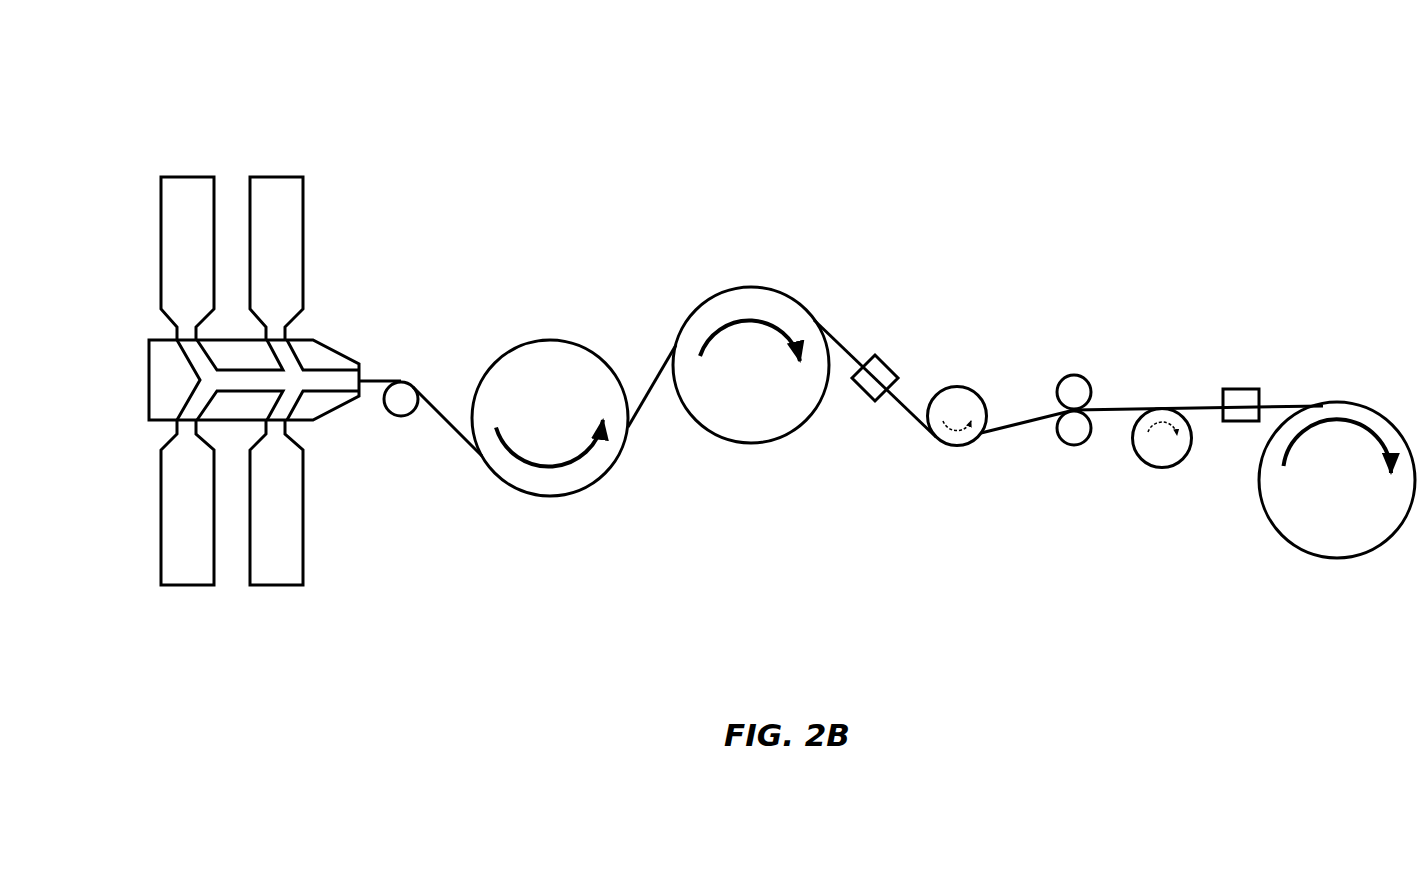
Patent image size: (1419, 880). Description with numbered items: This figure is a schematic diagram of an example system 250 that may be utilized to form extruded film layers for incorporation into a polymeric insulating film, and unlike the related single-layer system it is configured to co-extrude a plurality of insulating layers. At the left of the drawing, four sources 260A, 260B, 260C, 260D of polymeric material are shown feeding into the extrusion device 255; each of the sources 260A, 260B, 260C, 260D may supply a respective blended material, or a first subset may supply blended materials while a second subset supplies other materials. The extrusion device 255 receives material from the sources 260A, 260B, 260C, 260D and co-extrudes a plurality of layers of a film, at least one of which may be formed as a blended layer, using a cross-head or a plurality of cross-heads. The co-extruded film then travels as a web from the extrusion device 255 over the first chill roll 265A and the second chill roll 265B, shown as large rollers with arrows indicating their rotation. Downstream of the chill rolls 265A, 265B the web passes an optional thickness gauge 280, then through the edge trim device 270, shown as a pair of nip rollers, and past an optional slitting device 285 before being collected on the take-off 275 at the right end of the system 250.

The system 250 is at (297, 72).
The extrusion device 255 is at (167, 383).
The source of polymeric material 260A is at (185, 188).
The source of polymeric material 260B is at (283, 195).
The source of polymeric material 260C is at (181, 567).
The source of polymeric material 260D is at (282, 566).
The chill roll 265A is at (553, 368).
The chill roll 265B is at (768, 417).
The edge trim device 270 is at (1075, 392).
The take-off 275 is at (1328, 530).
The thickness gauge 280 is at (877, 370).
The slitting device 285 is at (1243, 400).